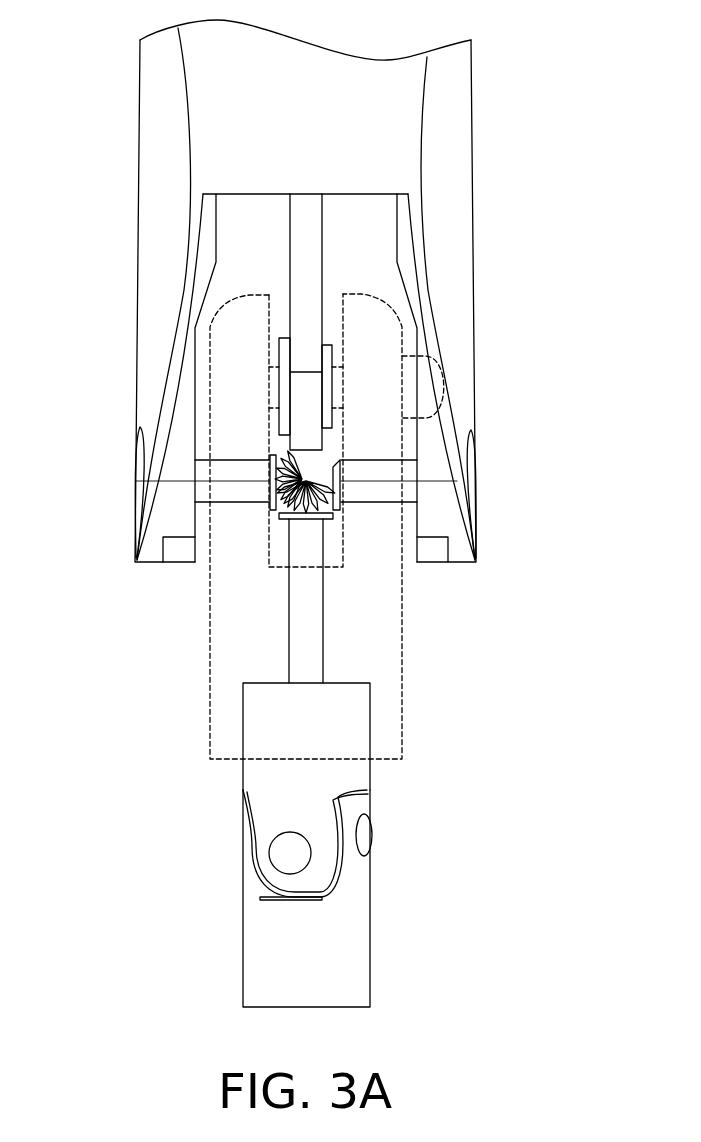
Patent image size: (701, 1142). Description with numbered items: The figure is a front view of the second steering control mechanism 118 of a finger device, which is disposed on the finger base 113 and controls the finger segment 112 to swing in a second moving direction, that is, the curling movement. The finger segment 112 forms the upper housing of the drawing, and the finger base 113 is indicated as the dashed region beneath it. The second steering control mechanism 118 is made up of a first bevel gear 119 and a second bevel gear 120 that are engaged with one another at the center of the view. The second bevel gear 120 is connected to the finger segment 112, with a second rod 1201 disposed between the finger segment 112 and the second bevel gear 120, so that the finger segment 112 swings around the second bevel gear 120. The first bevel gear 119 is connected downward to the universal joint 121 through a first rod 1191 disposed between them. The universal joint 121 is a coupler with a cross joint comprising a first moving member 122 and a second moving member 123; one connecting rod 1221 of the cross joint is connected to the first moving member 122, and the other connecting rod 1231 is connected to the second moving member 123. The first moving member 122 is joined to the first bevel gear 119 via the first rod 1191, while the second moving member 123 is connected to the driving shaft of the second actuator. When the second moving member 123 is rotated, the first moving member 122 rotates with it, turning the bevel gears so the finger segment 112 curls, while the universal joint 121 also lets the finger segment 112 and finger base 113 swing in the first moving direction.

The finger segment 112 is at (398, 166).
The finger base 113 is at (392, 310).
The second rod 1201 is at (234, 487).
The second steering control mechanism 118 is at (178, 551).
The second bevel gear 120 is at (275, 482).
The first bevel gear 119 is at (303, 512).
The first rod 1191 is at (303, 648).
The universal joint 121 is at (391, 845).
The first moving member 122 is at (348, 773).
The second moving member 123 is at (363, 898).
The connecting rod 1221 is at (290, 860).
The connecting rod 1231 is at (366, 835).